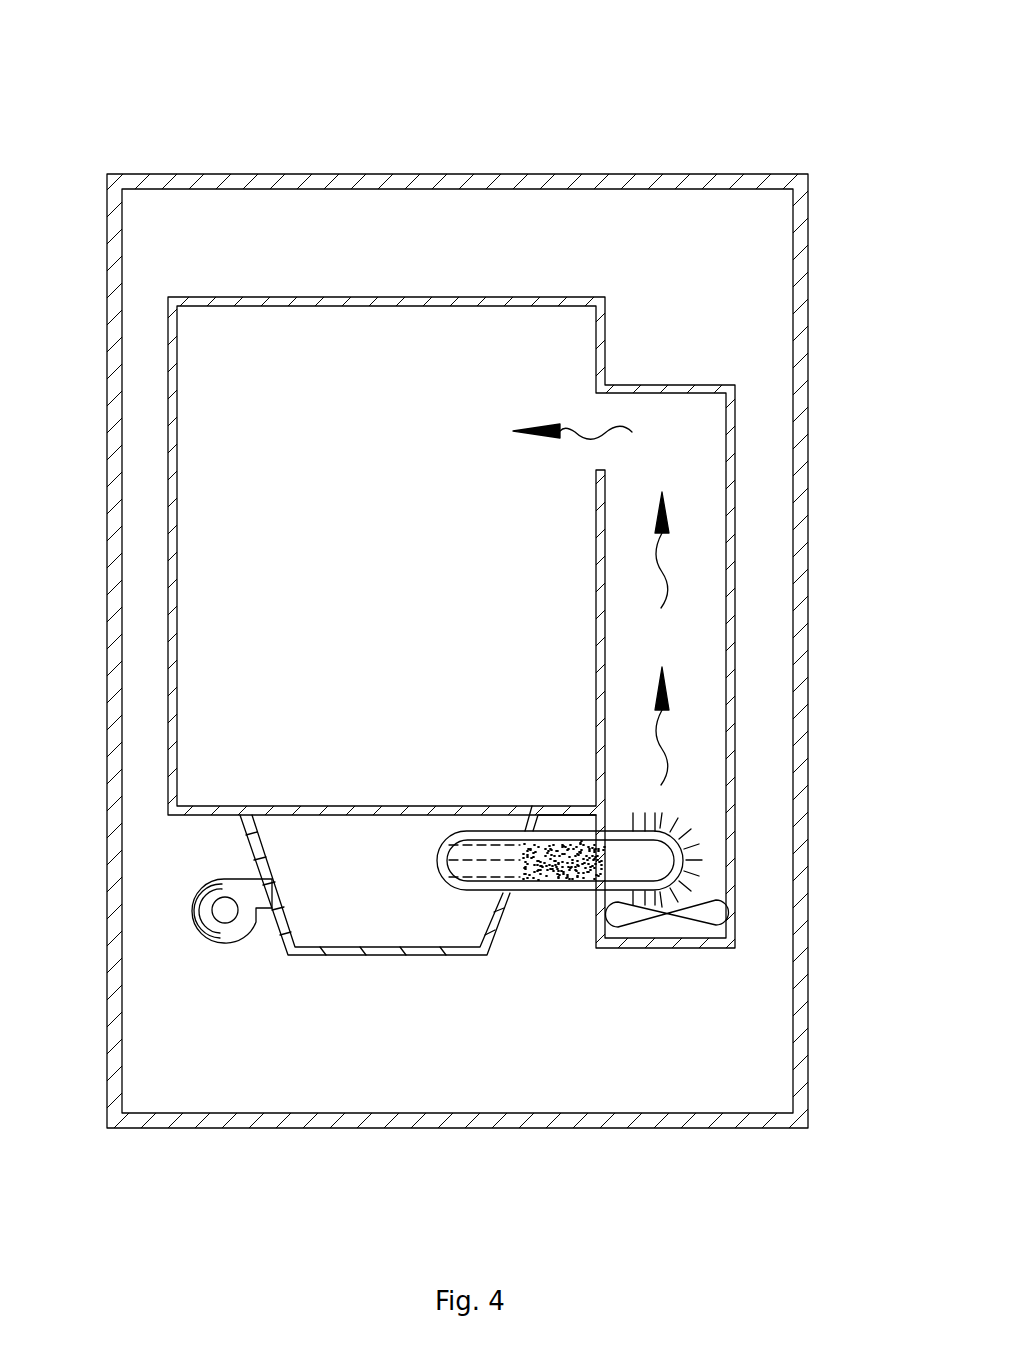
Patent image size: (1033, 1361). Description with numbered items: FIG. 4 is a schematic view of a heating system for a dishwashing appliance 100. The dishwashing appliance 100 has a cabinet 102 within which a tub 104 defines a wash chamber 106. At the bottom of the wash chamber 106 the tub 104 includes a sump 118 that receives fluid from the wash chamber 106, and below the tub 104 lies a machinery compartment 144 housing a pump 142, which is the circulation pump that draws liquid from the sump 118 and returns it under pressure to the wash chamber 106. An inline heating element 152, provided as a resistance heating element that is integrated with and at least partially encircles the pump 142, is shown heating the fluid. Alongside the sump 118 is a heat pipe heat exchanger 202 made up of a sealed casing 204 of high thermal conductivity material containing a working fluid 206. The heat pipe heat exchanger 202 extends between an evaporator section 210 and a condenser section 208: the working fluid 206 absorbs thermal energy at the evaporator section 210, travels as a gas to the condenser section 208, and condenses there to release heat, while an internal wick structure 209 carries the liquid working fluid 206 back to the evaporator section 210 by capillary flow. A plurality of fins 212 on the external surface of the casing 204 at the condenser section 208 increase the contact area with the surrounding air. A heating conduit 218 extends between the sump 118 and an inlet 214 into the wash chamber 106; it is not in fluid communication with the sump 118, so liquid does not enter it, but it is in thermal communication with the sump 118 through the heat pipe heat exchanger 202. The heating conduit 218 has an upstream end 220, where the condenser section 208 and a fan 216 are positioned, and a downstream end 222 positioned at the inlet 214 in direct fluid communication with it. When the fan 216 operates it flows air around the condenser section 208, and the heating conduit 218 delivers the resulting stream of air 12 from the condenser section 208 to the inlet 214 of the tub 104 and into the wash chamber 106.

The dishwashing appliance 100 is at (163, 95).
The cabinet 102 is at (483, 188).
The tub 104 is at (395, 553).
The wash chamber 106 is at (271, 332).
The stream of air 12 is at (573, 437).
The sump 118 is at (337, 918).
The pump 142 is at (237, 925).
The machinery compartment 144 is at (220, 1095).
The inline heating element 152 is at (212, 880).
The heat pipe heat exchanger 202 is at (540, 902).
The sealed casing 204 is at (558, 836).
The working fluid 206 is at (472, 857).
The condenser section 208 is at (715, 852).
The internal wick structure 209 is at (565, 880).
The evaporator section 210 is at (455, 902).
The fins 212 is at (665, 815).
The inlet 214 is at (597, 414).
The fan 216 is at (705, 915).
The heating conduit 218 is at (730, 625).
The upstream end 220 is at (705, 948).
The downstream end 222 is at (645, 392).